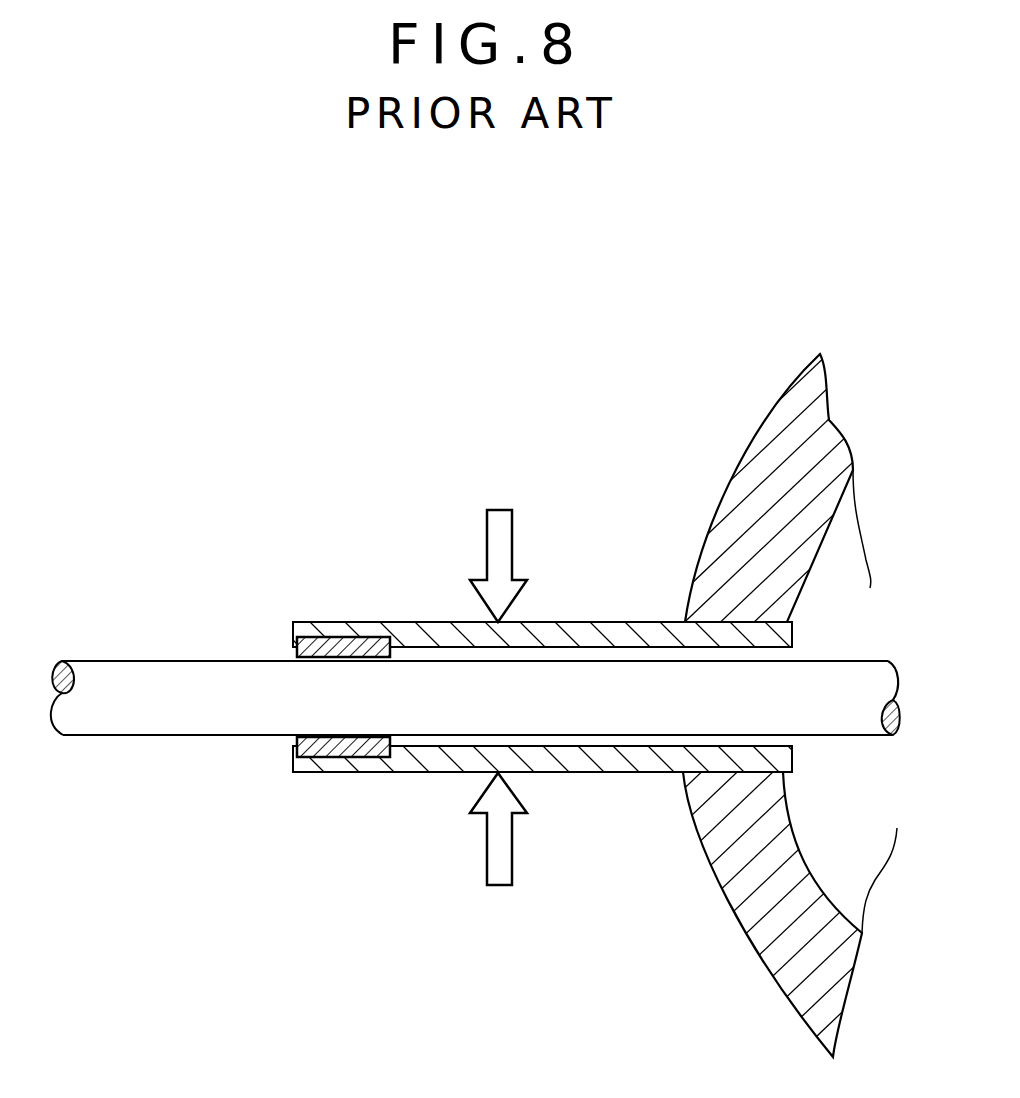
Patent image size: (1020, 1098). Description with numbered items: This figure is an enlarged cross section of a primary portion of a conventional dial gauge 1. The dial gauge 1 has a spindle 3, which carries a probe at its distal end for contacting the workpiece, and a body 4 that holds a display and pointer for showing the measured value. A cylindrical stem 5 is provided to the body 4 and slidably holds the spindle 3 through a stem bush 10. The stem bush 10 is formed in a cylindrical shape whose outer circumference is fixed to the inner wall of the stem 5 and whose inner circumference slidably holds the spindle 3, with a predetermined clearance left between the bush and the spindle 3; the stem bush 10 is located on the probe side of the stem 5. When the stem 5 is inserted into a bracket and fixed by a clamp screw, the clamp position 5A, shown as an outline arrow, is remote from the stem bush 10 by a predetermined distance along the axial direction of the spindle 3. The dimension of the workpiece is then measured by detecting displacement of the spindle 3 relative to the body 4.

The dial gauge 1 is at (312, 490).
The spindle 3 is at (130, 722).
The body 4 is at (746, 459).
The stem 5 is at (638, 626).
The clamp position 5A is at (512, 540).
The stem bush 10 is at (334, 630).